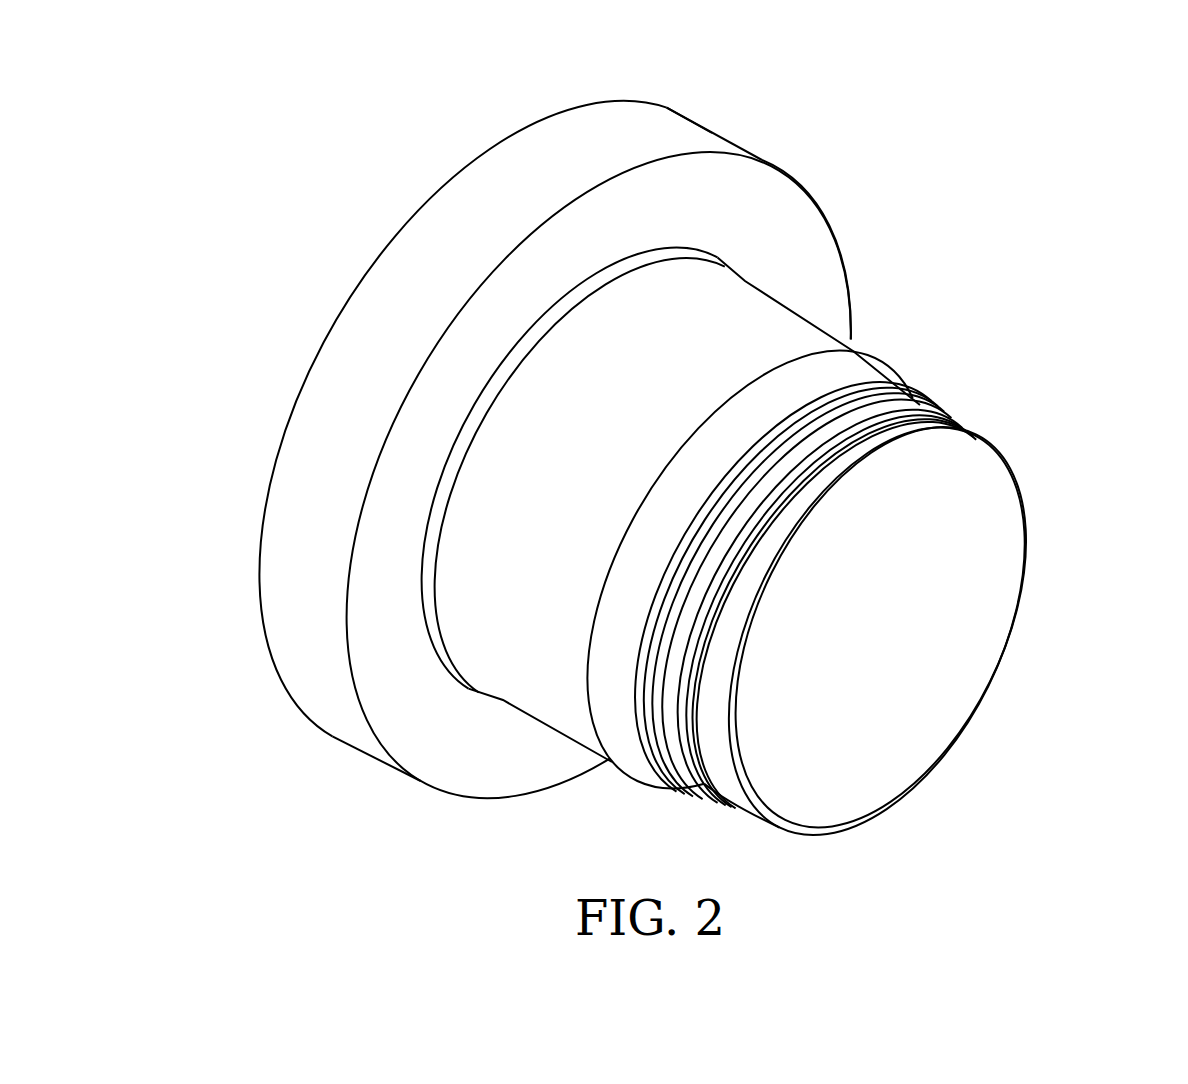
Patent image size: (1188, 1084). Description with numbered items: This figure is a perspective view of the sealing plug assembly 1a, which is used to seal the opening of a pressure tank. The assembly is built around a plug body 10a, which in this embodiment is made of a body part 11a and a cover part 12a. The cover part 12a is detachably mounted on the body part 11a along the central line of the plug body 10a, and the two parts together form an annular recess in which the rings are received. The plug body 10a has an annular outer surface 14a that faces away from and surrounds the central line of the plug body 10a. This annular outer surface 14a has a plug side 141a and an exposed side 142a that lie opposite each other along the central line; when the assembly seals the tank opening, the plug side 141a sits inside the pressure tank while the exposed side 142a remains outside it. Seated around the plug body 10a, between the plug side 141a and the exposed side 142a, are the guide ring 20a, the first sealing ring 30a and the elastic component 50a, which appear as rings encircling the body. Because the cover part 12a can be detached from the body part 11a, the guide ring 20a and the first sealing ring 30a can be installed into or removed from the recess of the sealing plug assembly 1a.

The sealing plug assembly 1a is at (311, 104).
The plug body 10a is at (867, 287).
The body part 11a is at (783, 204).
The cover part 12a is at (973, 570).
The annular outer surface 14a is at (546, 681).
The plug side 141a is at (736, 810).
The exposed side 142a is at (662, 138).
The guide ring 20a is at (863, 400).
The first sealing ring 30a is at (886, 416).
The elastic component 50a is at (897, 417).